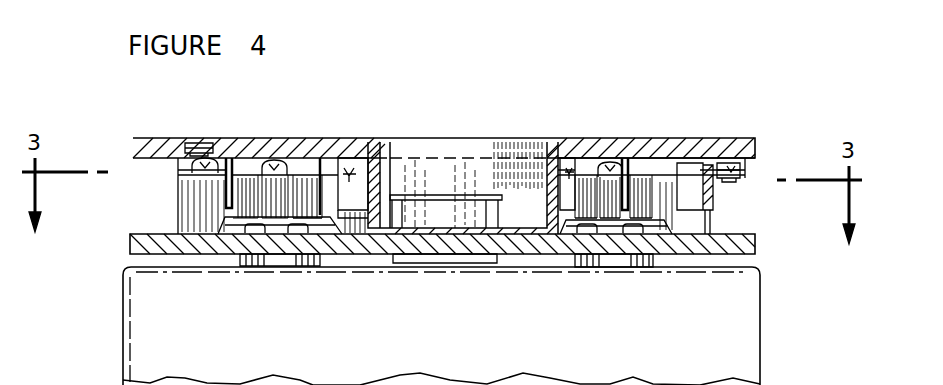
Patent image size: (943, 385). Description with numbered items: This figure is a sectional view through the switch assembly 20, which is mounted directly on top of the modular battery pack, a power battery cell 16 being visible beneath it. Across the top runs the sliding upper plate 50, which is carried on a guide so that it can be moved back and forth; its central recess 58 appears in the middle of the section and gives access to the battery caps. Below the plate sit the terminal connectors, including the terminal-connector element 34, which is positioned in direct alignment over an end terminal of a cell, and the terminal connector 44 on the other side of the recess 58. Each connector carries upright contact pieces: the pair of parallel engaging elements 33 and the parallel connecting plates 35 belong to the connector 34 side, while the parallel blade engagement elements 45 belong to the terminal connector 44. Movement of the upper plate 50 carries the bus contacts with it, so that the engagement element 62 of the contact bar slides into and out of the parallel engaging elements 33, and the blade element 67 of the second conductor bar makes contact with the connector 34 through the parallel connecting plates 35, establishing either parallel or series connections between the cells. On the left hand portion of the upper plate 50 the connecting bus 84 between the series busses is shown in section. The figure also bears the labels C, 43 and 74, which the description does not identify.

The switch assembly 20 is at (122, 133).
The connecting bus 84 is at (198, 143).
The parallel connecting plates 35 is at (245, 190).
The terminal-connector element 34 is at (286, 195).
The parallel engaging elements 33 is at (315, 185).
The connector C is at (445, 186).
The central recess 58 is at (533, 140).
The parallel blade engagement elements 45 is at (582, 182).
The terminal connector 44 is at (627, 187).
The block 43 is at (665, 172).
The upper plate 50 is at (713, 136).
The blade element 67 is at (218, 192).
The engagement element 62 is at (356, 228).
The side member 74 is at (705, 203).
The power battery cell 16 is at (468, 334).